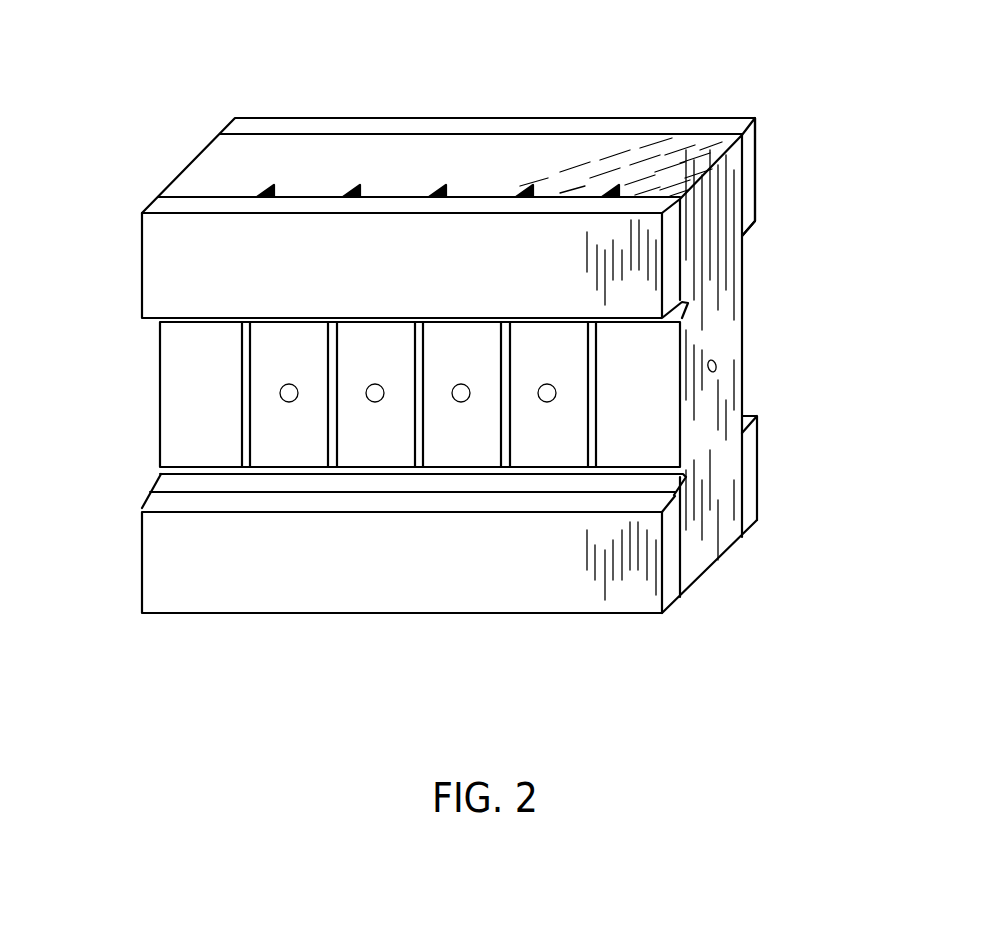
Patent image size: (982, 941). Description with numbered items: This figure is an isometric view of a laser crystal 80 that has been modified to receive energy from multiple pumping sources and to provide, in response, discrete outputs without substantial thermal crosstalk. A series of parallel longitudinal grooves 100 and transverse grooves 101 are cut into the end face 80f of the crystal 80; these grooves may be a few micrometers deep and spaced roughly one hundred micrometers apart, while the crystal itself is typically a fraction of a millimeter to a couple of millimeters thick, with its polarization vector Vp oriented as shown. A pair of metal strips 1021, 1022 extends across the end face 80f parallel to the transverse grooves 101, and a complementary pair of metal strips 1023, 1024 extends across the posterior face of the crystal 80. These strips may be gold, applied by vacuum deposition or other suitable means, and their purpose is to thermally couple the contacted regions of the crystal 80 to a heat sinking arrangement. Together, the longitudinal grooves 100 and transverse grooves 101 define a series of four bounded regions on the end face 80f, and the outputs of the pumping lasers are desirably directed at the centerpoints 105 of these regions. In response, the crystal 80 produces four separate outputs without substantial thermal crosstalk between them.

The laser crystal 80 is at (500, 72).
The longitudinal grooves 100 is at (357, 196).
The metal strip 1021 is at (152, 253).
The metal strip 1022 is at (150, 548).
The metal strip 1023 is at (758, 500).
The metal strip 1024 is at (757, 167).
The transverse grooves 101 is at (742, 268).
The end face 80f is at (160, 394).
The centerpoints 105 is at (372, 403).
The polarization vector Vp is at (722, 372).